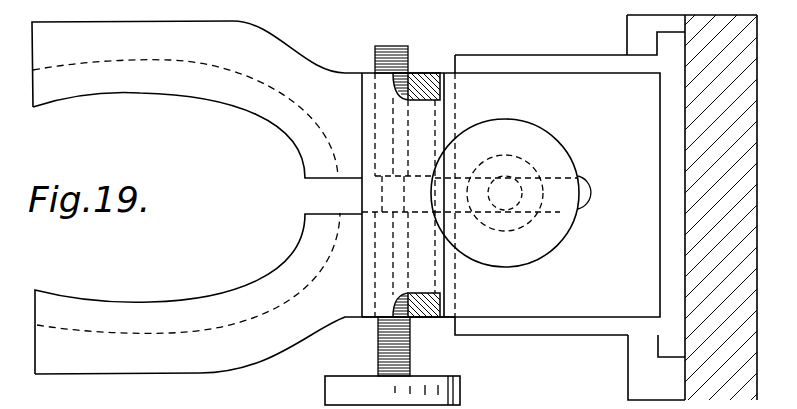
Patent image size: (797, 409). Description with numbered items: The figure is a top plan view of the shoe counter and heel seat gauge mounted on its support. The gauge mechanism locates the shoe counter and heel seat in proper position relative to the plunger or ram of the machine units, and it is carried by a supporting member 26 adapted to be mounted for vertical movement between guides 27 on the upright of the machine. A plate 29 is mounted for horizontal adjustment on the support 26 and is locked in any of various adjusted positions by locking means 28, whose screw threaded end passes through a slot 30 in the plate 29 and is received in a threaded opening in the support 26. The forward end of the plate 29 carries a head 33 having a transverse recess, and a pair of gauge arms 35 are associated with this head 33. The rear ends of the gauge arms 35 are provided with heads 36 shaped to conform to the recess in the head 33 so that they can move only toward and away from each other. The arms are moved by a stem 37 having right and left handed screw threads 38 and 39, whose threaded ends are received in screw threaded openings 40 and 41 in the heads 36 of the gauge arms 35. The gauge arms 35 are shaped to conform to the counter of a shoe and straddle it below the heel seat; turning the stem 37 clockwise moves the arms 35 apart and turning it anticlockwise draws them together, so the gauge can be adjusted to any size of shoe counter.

The supporting member 26 is at (666, 250).
The guides 27 is at (627, 31).
The locking means 28 is at (558, 230).
The plate 29 is at (523, 184).
The slot 30 is at (598, 195).
The head 33 is at (366, 116).
The gauge arms 35 is at (179, 87).
The heads 36 is at (425, 90).
The stem 37 is at (393, 45).
The right handed screw thread 38 is at (377, 347).
The left handed screw thread 39 is at (375, 62).
The screw threaded opening 40 is at (415, 317).
The screw threaded opening 41 is at (418, 72).